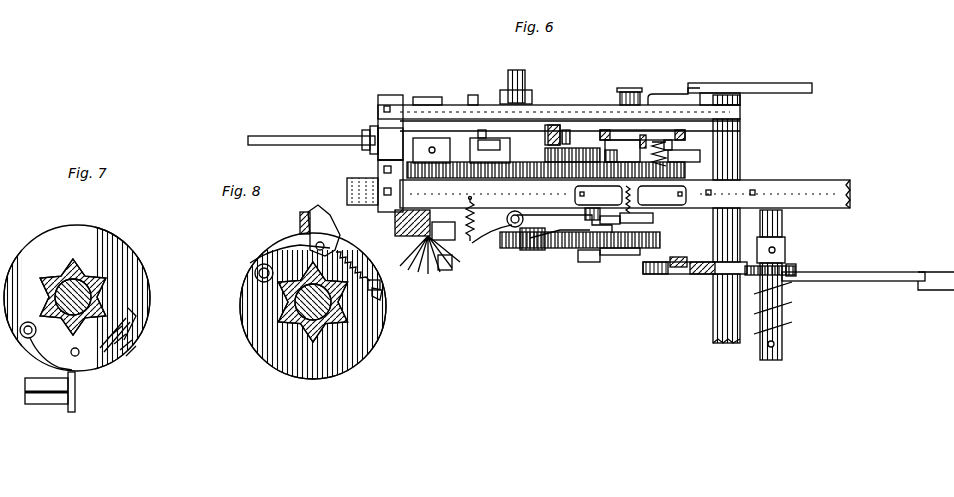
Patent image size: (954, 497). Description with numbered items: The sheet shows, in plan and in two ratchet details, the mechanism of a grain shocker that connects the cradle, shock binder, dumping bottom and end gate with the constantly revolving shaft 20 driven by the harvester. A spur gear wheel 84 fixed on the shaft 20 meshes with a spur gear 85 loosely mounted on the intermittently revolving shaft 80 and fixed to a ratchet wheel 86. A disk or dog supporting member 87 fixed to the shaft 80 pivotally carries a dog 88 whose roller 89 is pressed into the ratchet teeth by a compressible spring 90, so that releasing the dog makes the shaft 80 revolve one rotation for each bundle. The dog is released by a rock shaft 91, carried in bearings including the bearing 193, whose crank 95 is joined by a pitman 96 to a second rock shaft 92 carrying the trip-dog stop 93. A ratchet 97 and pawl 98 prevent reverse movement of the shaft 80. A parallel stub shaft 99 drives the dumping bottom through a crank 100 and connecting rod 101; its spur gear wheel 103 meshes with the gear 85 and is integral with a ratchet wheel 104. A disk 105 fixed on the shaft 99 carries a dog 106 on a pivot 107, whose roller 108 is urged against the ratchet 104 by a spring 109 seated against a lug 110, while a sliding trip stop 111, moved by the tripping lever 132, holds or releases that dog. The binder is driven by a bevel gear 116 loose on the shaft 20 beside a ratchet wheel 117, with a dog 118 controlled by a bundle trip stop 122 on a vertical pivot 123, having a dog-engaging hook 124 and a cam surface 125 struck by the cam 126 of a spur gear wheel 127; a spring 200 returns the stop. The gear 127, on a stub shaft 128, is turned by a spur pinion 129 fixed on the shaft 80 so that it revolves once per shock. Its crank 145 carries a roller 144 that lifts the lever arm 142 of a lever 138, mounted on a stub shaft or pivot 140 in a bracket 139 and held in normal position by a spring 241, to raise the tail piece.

In FIG. 6, the constantly revolving shaft 20 is at (425, 97).
In FIG. 6, the intermittently revolving shaft 80 is at (526, 86).
In FIG. 7, the intermittently revolving shaft 80 is at (80, 287).
In FIG. 6, the spur gear wheel 84 is at (407, 161).
In FIG. 6, the spur gear 85 is at (548, 162).
In FIG. 6, the ratchet wheel 86 is at (552, 138).
In FIG. 7, the ratchet wheel 86 is at (95, 290).
In FIG. 6, the disk or dog supporting member 87 is at (483, 133).
In FIG. 7, the disk or dog supporting member 87 is at (104, 236).
In FIG. 6, the dog 88 is at (492, 143).
In FIG. 7, the dog 88 is at (55, 348).
In FIG. 6, the roller 89 is at (487, 160).
In FIG. 7, the roller 89 is at (24, 322).
In FIG. 6, the compressible spring 90 is at (552, 145).
In FIG. 7, the compressible spring 90 is at (124, 340).
In FIG. 6, the rock shaft 91 is at (277, 135).
In FIG. 7, the rock shaft 92 is at (45, 404).
In FIG. 7, the trip-dog stop 93 is at (75, 400).
In FIG. 6, the crank 95 is at (384, 138).
In FIG. 6, the connecting rod or pitman 96 is at (362, 133).
In FIG. 6, the ratchet 97 is at (537, 101).
In FIG. 6, the pawl 98 is at (497, 101).
In FIG. 6, the stub shaft 99 is at (653, 219).
In FIG. 8, the stub shaft 99 is at (326, 310).
In FIG. 6, the crank 100 is at (672, 92).
In FIG. 6, the connecting rod 101 is at (746, 84).
In FIG. 6, the spur gear wheel 103 is at (700, 163).
In FIG. 6, the ratchet wheel 104 is at (662, 195).
In FIG. 8, the ratchet wheel 104 is at (290, 302).
In FIG. 6, the disk 105 is at (625, 135).
In FIG. 8, the disk 105 is at (382, 322).
In FIG. 6, the dog 106 is at (599, 145).
In FIG. 8, the dog 106 is at (275, 242).
In FIG. 8, the pivot 107 is at (312, 240).
In FIG. 6, the roller 108 is at (625, 194).
In FIG. 8, the roller 108 is at (255, 271).
In FIG. 6, the compressible spring 109 is at (668, 152).
In FIG. 8, the compressible spring 109 is at (358, 262).
In FIG. 6, the lug 110 is at (667, 140).
In FIG. 8, the lug 110 is at (382, 294).
In FIG. 6, the trip stop 111 is at (643, 134).
In FIG. 8, the trip stop 111 is at (315, 208).
In FIG. 6, the bevel gear 116 is at (420, 252).
In FIG. 6, the ratchet wheel 117 is at (462, 244).
In FIG. 8, the dog 118 is at (398, 281).
In FIG. 6, the bundle trip stop 122 is at (480, 248).
In FIG. 6, the vertical pivot 123 is at (473, 214).
In FIG. 6, the dog-engaging hook 124 is at (395, 216).
In FIG. 6, the cam surface 125 is at (619, 256).
In FIG. 6, the cam 126 is at (540, 242).
In FIG. 6, the spur gear wheel 127 is at (656, 241).
In FIG. 6, the stub shaft 128 is at (592, 263).
In FIG. 6, the spur pinion 129 is at (515, 230).
In FIG. 6, the tripping lever 132 is at (602, 199).
In FIG. 6, the lever 138 is at (868, 283).
In FIG. 6, the bracket 139 is at (792, 288).
In FIG. 6, the stub shaft or pivot 140 is at (783, 345).
In FIG. 6, the lever arm 142 is at (705, 275).
In FIG. 6, the roller 144 is at (688, 262).
In FIG. 6, the crank 145 is at (665, 275).
In FIG. 6, the bearing 193 is at (390, 140).
In FIG. 6, the spring 200 is at (450, 272).
In FIG. 6, the spring 241 is at (781, 316).